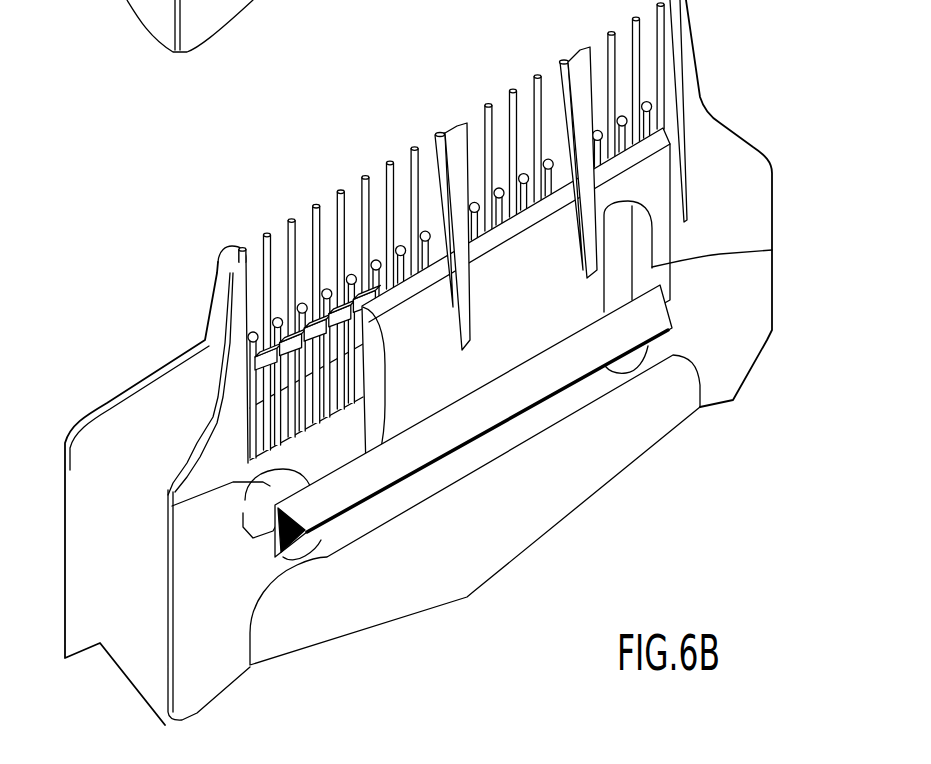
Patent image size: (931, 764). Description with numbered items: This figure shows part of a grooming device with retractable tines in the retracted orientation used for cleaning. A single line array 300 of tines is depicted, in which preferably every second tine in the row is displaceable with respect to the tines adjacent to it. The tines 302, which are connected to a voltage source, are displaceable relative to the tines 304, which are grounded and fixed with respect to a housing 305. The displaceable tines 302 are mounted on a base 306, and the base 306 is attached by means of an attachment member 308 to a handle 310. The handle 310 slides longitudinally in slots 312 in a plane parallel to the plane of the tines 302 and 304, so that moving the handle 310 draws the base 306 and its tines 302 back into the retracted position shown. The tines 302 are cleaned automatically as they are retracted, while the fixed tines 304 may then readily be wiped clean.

The line array of tines 300 is at (210, 196).
The displaceable tines 302 is at (470, 225).
The fixed tines 304 is at (413, 147).
The housing 305 is at (748, 156).
The base 306 is at (343, 449).
The attachment member 308 is at (173, 506).
The handle 310 is at (523, 407).
The slots 312 is at (772, 250).